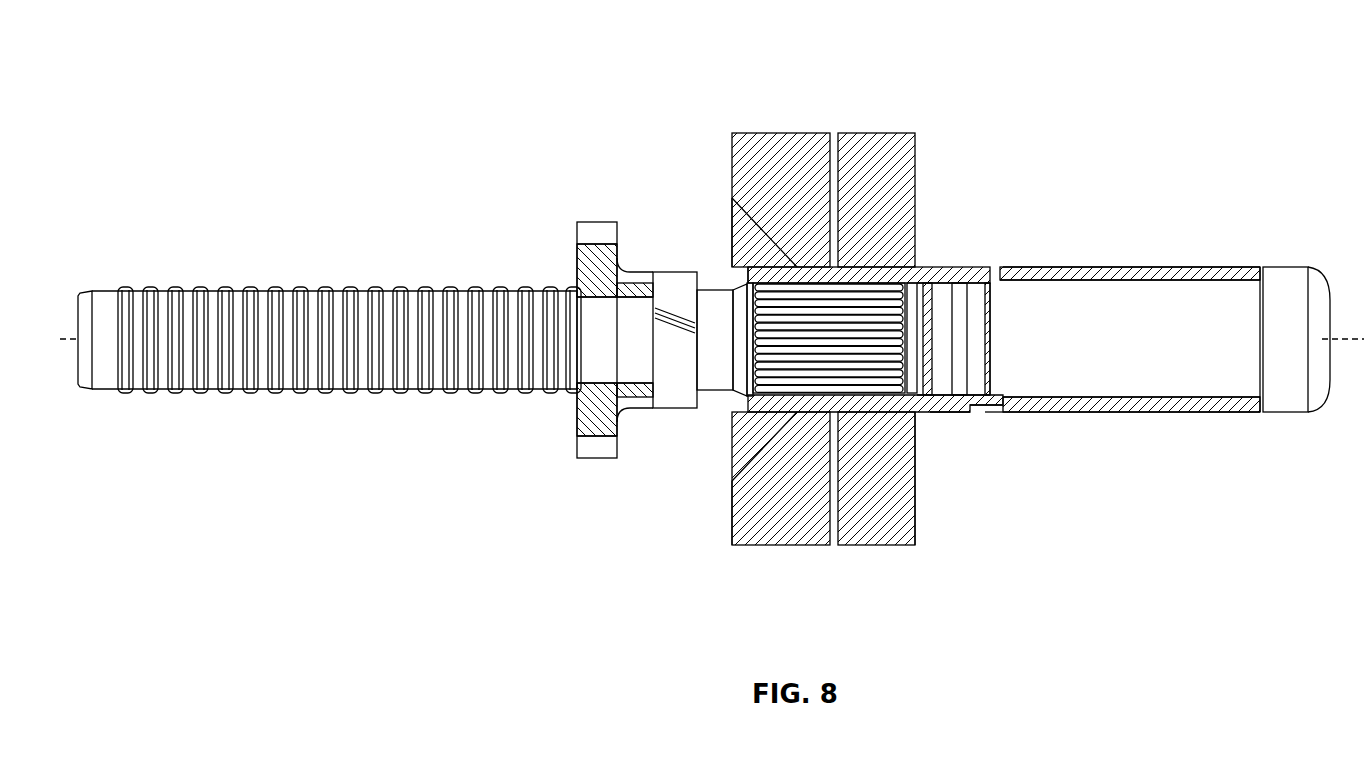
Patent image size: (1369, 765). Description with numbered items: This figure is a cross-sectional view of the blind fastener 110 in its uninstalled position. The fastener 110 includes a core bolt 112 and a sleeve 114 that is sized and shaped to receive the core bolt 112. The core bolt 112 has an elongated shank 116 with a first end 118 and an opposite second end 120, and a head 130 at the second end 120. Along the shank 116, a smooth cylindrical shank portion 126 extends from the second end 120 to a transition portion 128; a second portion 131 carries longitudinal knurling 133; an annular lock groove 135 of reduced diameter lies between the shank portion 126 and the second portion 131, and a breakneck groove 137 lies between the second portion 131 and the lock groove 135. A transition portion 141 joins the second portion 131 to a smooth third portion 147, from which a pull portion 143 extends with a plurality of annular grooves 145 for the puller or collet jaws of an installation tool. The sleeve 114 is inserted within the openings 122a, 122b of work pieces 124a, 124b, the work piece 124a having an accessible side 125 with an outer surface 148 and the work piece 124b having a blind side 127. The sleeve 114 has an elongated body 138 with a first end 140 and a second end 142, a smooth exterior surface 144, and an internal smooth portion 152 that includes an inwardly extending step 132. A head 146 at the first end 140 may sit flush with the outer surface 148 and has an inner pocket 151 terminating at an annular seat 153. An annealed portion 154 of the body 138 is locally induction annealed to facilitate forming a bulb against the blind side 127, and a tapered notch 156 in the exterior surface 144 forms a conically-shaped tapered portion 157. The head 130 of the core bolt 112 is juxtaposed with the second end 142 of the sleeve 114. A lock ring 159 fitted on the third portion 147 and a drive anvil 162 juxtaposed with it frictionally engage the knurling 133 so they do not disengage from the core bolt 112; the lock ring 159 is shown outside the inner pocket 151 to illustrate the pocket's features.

The blind fastener 110 is at (403, 62).
The core bolt 112 is at (517, 287).
The sleeve 114 is at (958, 300).
The elongated shank 116 is at (502, 404).
The first end 118 is at (78, 292).
The second end 120 is at (1222, 305).
The opening 122a is at (805, 263).
The opening 122b is at (877, 265).
The work piece 124a is at (783, 535).
The work piece 124b is at (877, 535).
The accessible side 125 is at (732, 513).
The smooth cylindrical shank portion 126 is at (1048, 293).
The blind side 127 is at (916, 480).
The transition portion 128 is at (993, 343).
The head 130 is at (1316, 272).
The second portion 131 is at (928, 290).
The inwardly extending step 132 is at (822, 272).
The knurling 133 is at (877, 313).
The annular lock groove 135 is at (990, 282).
The breakneck groove 137 is at (950, 413).
The elongated body 138 is at (1038, 412).
The first end 140 is at (732, 237).
The transition portion 141 is at (740, 310).
The second end 142 is at (1240, 413).
The pull portion 143 is at (318, 287).
The smooth exterior surface 144 is at (1172, 266).
The annular grooves 145 is at (358, 393).
The head 146 is at (732, 256).
The smooth third portion 147 is at (610, 320).
The outer surface 148 is at (731, 480).
The inner pocket 151 is at (727, 396).
The internal smooth portion 152 is at (1165, 398).
The annular seat 153 is at (753, 277).
The annealed portion 154 is at (1090, 267).
The tapered notch 156 is at (975, 410).
The tapered portion 157 is at (997, 428).
The lock ring 159 is at (660, 350).
The drive anvil 162 is at (579, 272).